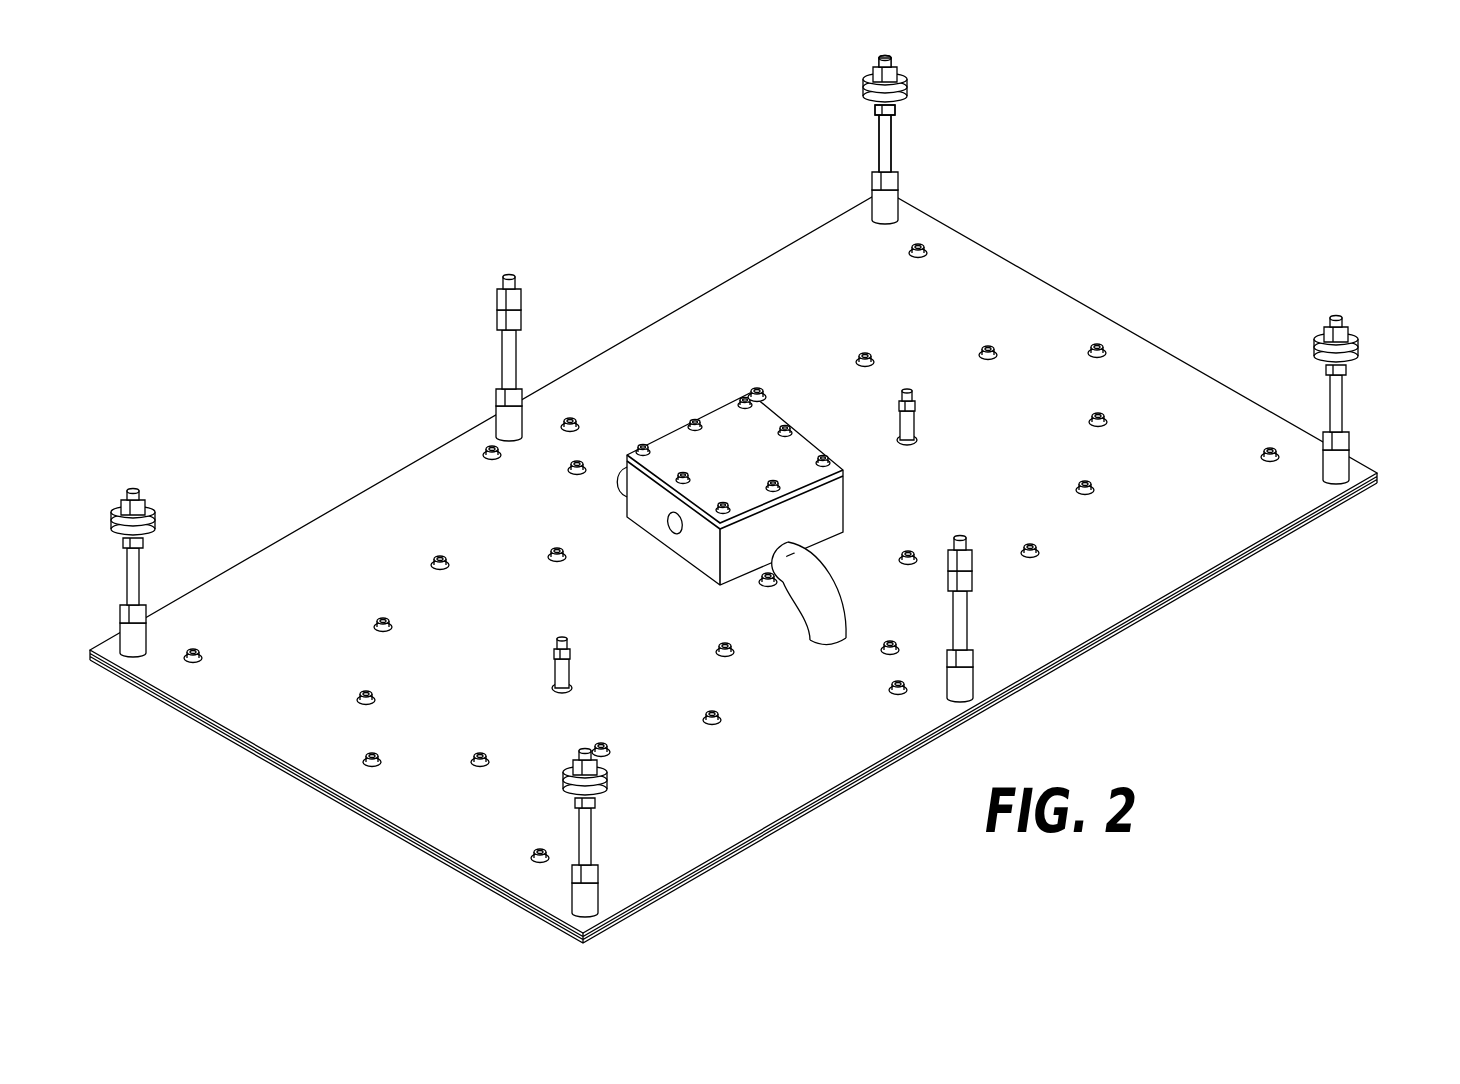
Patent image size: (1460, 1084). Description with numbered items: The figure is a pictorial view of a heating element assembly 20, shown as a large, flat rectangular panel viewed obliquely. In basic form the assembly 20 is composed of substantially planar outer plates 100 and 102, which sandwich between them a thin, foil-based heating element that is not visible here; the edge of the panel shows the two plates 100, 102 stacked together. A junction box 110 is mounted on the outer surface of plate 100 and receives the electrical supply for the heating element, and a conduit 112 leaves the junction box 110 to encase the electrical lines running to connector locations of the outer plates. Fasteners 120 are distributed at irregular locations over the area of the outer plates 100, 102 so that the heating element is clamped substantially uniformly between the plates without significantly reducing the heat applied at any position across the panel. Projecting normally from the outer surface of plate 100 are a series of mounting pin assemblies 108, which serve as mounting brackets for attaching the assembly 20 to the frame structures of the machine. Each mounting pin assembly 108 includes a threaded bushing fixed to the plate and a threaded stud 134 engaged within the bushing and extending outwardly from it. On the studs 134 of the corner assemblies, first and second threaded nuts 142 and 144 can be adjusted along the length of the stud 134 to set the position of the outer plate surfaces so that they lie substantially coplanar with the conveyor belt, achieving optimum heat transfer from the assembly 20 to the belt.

The heating element assembly 20 is at (770, 497).
The outer plate 100 is at (668, 842).
The outer plate 102 is at (757, 848).
The mounting pin assembly 108 is at (900, 138).
The junction box 110 is at (718, 423).
The conduit 112 is at (620, 475).
The fastener 120 is at (438, 560).
The threaded stud 134 is at (878, 145).
The first threaded nut 142 is at (879, 64).
The second threaded nut 144 is at (875, 108).